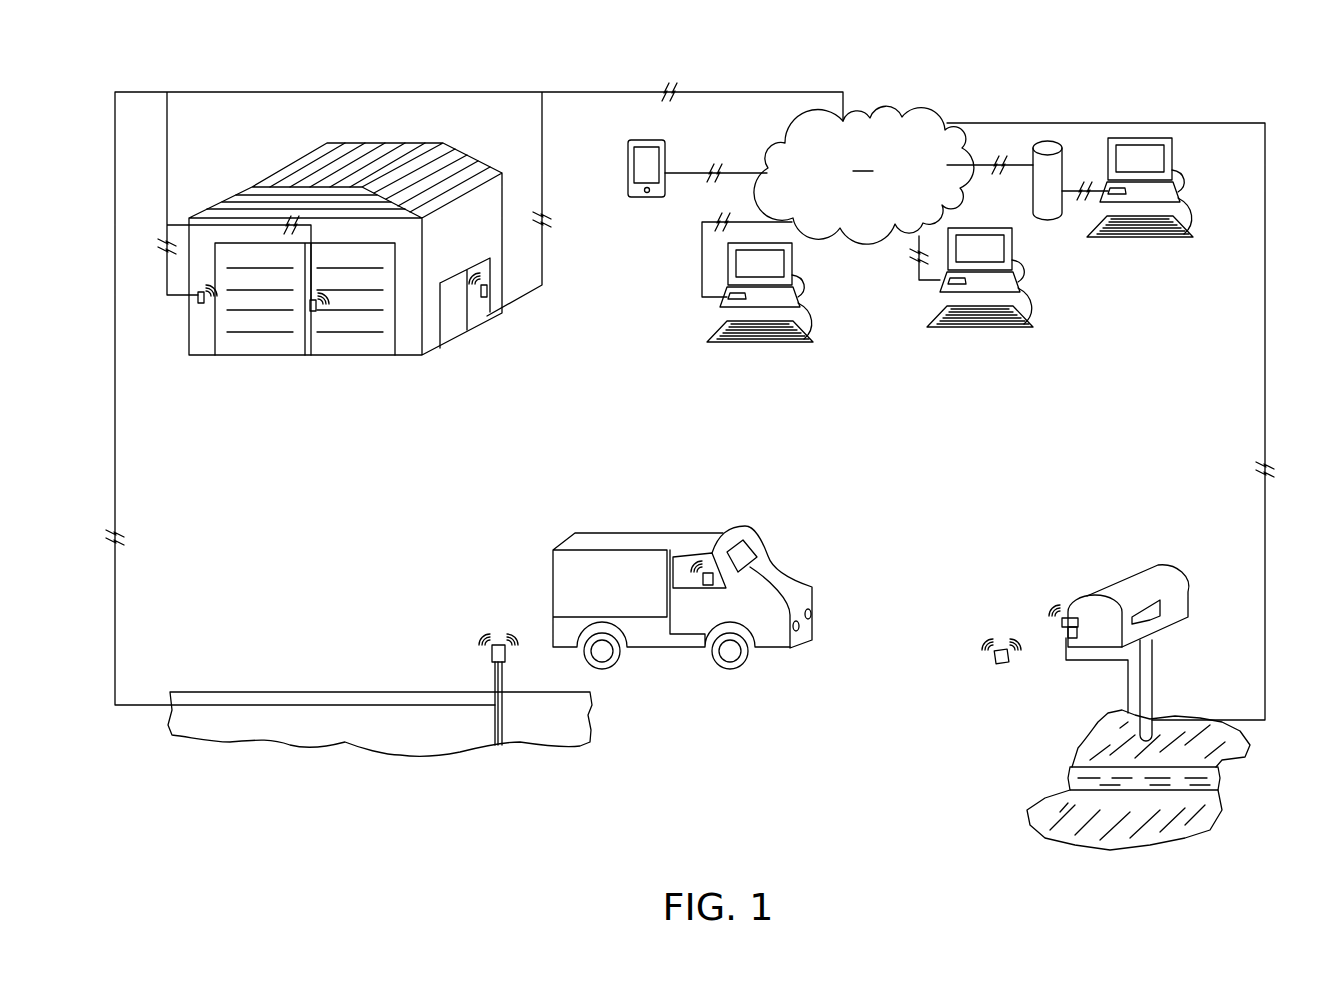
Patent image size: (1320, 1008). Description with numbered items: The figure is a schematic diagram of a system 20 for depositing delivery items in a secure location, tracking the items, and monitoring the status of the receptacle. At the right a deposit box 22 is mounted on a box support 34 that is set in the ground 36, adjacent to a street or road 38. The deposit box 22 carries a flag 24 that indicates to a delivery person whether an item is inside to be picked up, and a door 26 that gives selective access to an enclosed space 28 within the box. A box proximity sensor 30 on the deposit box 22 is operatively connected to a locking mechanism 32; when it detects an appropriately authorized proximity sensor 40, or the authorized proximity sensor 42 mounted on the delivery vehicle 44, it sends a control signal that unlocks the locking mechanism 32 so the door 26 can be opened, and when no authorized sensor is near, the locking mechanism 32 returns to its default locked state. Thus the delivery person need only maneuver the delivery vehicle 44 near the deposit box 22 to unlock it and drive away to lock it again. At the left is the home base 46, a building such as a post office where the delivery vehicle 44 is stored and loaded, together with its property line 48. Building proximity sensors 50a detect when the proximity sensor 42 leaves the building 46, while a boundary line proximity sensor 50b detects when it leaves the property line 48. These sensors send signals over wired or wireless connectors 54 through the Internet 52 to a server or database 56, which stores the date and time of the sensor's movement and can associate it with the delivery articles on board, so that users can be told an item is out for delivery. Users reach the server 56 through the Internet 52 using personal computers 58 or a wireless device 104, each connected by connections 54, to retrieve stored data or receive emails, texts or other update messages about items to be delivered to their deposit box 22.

The system 20 is at (905, 110).
The deposit box 22 is at (1155, 572).
The flag 24 is at (1163, 610).
The door 26 is at (1092, 606).
The enclosed space 28 is at (1123, 585).
The box proximity sensor 30 is at (1063, 617).
The locking mechanism 32 is at (1064, 642).
The box support 34 is at (1135, 727).
The ground 36 is at (1232, 757).
The street or road 38 is at (1050, 832).
The authorized proximity sensor 40 is at (995, 663).
The authorized proximity sensor 42 is at (727, 537).
The delivery vehicle 44 is at (780, 588).
The home base 46 is at (382, 345).
The property line 48 is at (514, 692).
The building proximity sensors 50a is at (193, 300).
The boundary line proximity sensor 50b is at (492, 650).
The Internet 52 is at (864, 175).
The connectors 54 is at (607, 92).
The server or database 56 is at (1052, 214).
The computers 58 is at (1173, 156).
The wireless device 104 is at (628, 165).